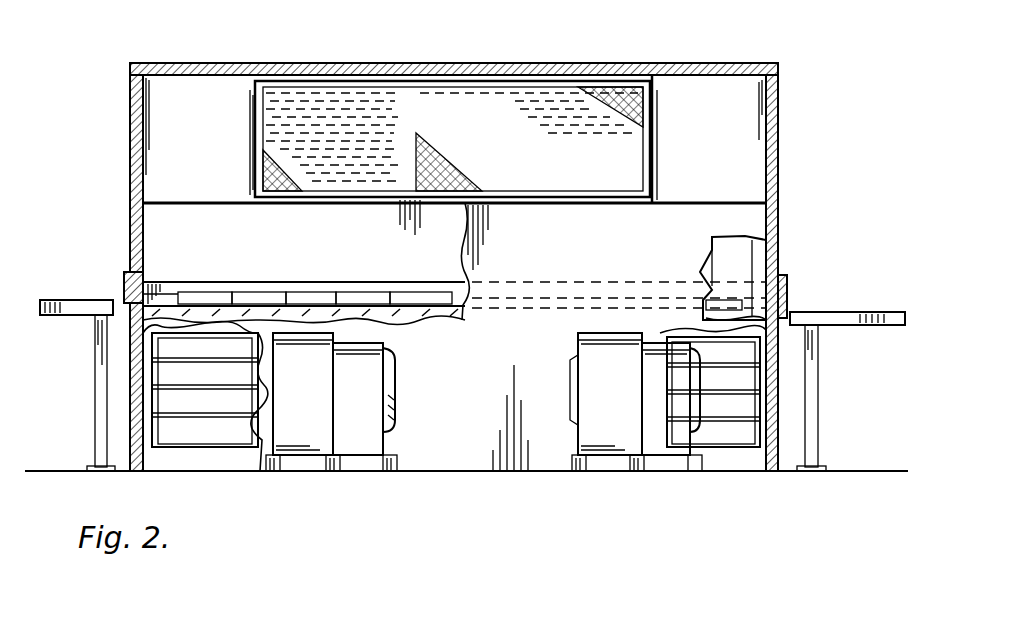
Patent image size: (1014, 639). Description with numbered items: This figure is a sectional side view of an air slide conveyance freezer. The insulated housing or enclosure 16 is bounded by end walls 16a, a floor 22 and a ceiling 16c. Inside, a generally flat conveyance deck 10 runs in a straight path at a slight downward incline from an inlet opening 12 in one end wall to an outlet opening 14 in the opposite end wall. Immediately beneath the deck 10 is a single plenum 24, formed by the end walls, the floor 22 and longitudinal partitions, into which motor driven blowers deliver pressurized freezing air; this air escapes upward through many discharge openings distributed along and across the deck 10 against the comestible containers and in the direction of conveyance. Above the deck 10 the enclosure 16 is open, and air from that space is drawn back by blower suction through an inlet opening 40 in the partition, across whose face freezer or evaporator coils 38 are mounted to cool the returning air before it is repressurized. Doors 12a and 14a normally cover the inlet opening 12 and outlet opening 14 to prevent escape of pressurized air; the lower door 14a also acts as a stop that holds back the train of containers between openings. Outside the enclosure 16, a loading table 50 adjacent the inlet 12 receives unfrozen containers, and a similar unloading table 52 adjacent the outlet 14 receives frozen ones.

The conveyance deck 10 is at (298, 296).
The inlet opening 12 is at (400, 279).
The inlet door 12a is at (126, 276).
The outlet opening 14 is at (752, 290).
The outlet door 14a is at (788, 298).
The insulated housing or enclosure 16 is at (451, 250).
The end wall 16a is at (130, 154).
The ceiling 16c is at (453, 132).
The floor 22 is at (440, 471).
The plenum 24 is at (406, 318).
The freezer or evaporator coils 38 is at (536, 108).
The partition inlet opening 40 is at (540, 207).
The loading table 50 is at (66, 298).
The unloading table 52 is at (850, 312).